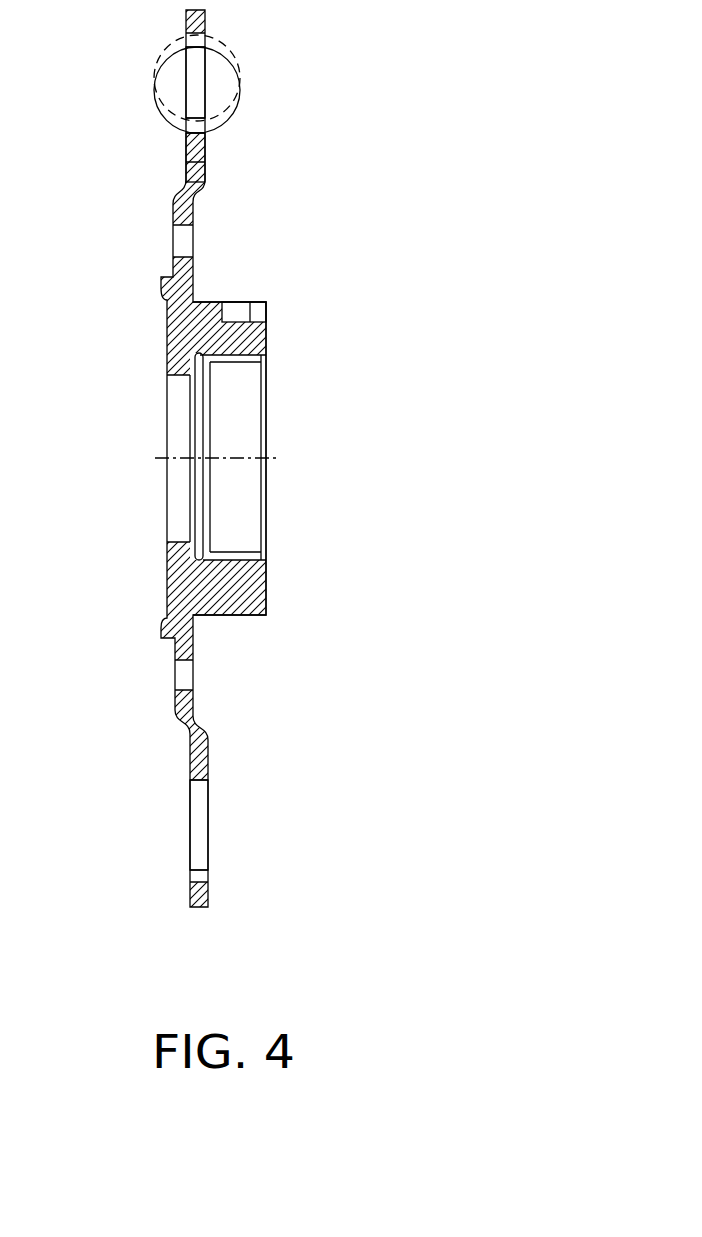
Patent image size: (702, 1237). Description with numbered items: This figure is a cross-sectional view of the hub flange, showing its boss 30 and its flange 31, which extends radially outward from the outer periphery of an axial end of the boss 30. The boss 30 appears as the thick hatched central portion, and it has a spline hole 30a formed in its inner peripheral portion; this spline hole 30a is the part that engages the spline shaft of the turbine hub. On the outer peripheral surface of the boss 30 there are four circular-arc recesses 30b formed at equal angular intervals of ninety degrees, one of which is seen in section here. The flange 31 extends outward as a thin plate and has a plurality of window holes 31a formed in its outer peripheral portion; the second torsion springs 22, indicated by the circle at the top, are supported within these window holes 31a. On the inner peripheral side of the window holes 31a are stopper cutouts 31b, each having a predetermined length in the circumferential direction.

The second torsion spring 22 is at (240, 58).
The boss 30 is at (252, 341).
The spline hole 30a is at (232, 552).
The circular-arc recess 30b is at (237, 322).
The flange 31 is at (186, 741).
The window hole 31a is at (190, 83).
The stopper cutout 31b is at (207, 172).